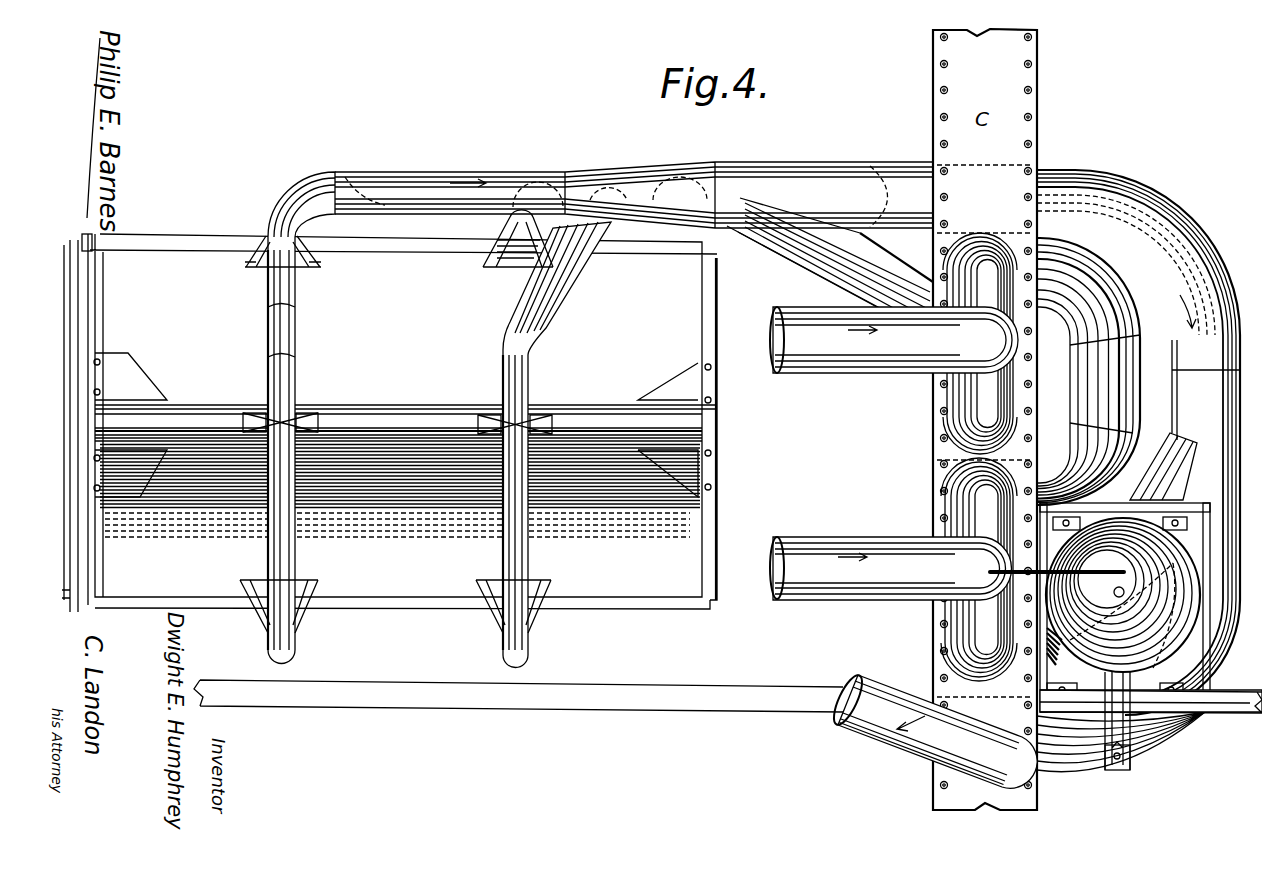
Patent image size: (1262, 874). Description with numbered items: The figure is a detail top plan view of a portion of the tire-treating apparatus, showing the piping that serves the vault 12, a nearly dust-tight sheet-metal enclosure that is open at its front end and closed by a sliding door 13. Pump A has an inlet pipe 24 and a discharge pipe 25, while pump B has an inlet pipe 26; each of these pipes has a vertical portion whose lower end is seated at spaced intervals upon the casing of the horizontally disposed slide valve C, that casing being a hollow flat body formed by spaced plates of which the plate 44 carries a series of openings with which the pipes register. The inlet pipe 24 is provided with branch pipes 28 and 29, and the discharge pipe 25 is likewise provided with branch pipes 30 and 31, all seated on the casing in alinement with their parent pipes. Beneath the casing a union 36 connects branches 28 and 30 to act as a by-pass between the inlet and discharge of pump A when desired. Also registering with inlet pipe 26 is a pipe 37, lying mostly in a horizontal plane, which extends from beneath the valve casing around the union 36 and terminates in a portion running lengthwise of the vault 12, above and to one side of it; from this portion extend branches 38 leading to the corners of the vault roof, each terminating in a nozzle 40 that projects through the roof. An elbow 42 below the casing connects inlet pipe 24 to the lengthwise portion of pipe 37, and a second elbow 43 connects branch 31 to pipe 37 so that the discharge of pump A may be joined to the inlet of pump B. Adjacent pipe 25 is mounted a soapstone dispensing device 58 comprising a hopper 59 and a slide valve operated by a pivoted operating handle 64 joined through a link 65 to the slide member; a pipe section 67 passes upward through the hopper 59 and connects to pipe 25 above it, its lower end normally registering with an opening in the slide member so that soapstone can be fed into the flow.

The vault 12 is at (389, 508).
The door 13 is at (82, 334).
The inlet pipe 24 is at (846, 376).
The discharge pipe 25 is at (873, 538).
The inlet pipe 26 is at (873, 710).
The branch pipe 28 is at (977, 238).
The branch pipe 29 is at (932, 437).
The branch pipe 30 is at (970, 487).
The branch pipe 31 is at (965, 653).
The union 36 is at (1084, 370).
The pipe 37 is at (1138, 442).
The branches 38 is at (298, 367).
The nozzle 40 is at (311, 268).
The elbow 42 is at (909, 268).
The second elbow 43 is at (1070, 645).
The plate 44 is at (1020, 787).
The soapstone dispensing device 58 is at (1198, 712).
The hopper 59 is at (1123, 595).
The pivoted operating handle 64 is at (1127, 758).
The link 65 is at (1125, 737).
The pipe section 67 is at (1122, 578).